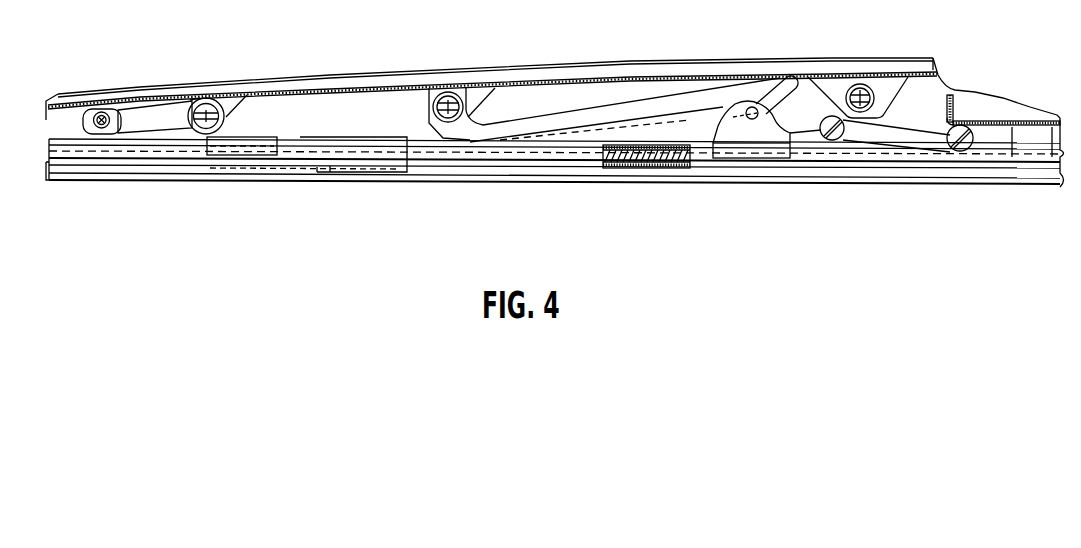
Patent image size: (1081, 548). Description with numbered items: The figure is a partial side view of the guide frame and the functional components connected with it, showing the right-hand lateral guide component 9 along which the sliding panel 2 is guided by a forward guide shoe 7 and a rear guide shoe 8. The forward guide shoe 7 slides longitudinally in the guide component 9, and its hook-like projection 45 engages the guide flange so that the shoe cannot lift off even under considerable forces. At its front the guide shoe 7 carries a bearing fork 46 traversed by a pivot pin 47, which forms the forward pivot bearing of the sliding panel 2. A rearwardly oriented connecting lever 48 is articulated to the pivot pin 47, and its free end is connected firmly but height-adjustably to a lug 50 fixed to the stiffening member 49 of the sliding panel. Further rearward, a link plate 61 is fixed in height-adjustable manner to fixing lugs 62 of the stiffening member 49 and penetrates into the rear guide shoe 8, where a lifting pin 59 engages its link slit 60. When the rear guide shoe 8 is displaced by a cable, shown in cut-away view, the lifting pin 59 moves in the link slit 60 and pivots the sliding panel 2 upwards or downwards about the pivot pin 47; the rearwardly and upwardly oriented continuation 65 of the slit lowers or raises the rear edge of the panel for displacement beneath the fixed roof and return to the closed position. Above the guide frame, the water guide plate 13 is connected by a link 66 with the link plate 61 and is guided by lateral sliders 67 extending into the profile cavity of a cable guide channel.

The sliding panel 2 is at (340, 72).
The forward guide shoe 7 is at (316, 137).
The rear guide shoe 8 is at (700, 144).
The lateral guide component 9 is at (128, 184).
The water guide plate 13 is at (988, 120).
The hook-like projection 45 is at (265, 139).
The bearing fork 46 is at (95, 133).
The pivot pin 47 is at (103, 113).
The connecting lever 48 is at (140, 120).
The stiffening member 49 is at (376, 90).
The lug 50 is at (231, 99).
The lifting pin 59 is at (782, 122).
The link slit 60 is at (628, 128).
The link plate 61 is at (528, 126).
The fixing lug 62 is at (477, 94).
The continuation of the link slit 65 is at (791, 98).
The link 66 is at (905, 135).
The lateral slider 67 is at (1033, 142).